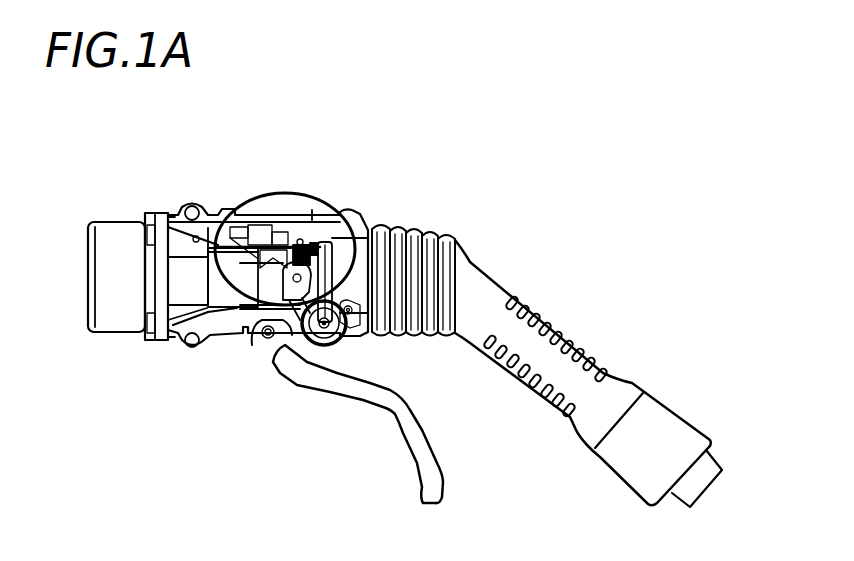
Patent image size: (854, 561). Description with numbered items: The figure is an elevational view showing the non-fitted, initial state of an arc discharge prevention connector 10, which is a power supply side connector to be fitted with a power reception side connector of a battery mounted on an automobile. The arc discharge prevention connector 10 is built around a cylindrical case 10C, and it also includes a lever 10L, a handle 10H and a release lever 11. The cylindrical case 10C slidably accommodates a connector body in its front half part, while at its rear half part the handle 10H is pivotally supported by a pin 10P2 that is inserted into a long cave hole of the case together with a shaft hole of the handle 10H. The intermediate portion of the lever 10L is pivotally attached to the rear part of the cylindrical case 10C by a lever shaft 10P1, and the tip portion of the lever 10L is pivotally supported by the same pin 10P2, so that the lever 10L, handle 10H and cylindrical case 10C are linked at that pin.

The arc discharge prevention connector 10 is at (447, 208).
The cylindrical case 10C is at (118, 320).
The handle 10H is at (497, 303).
The lever 10L is at (408, 435).
The lever shaft 10P1 is at (262, 336).
The pin 10P2 is at (302, 242).
The release lever 11 is at (333, 246).